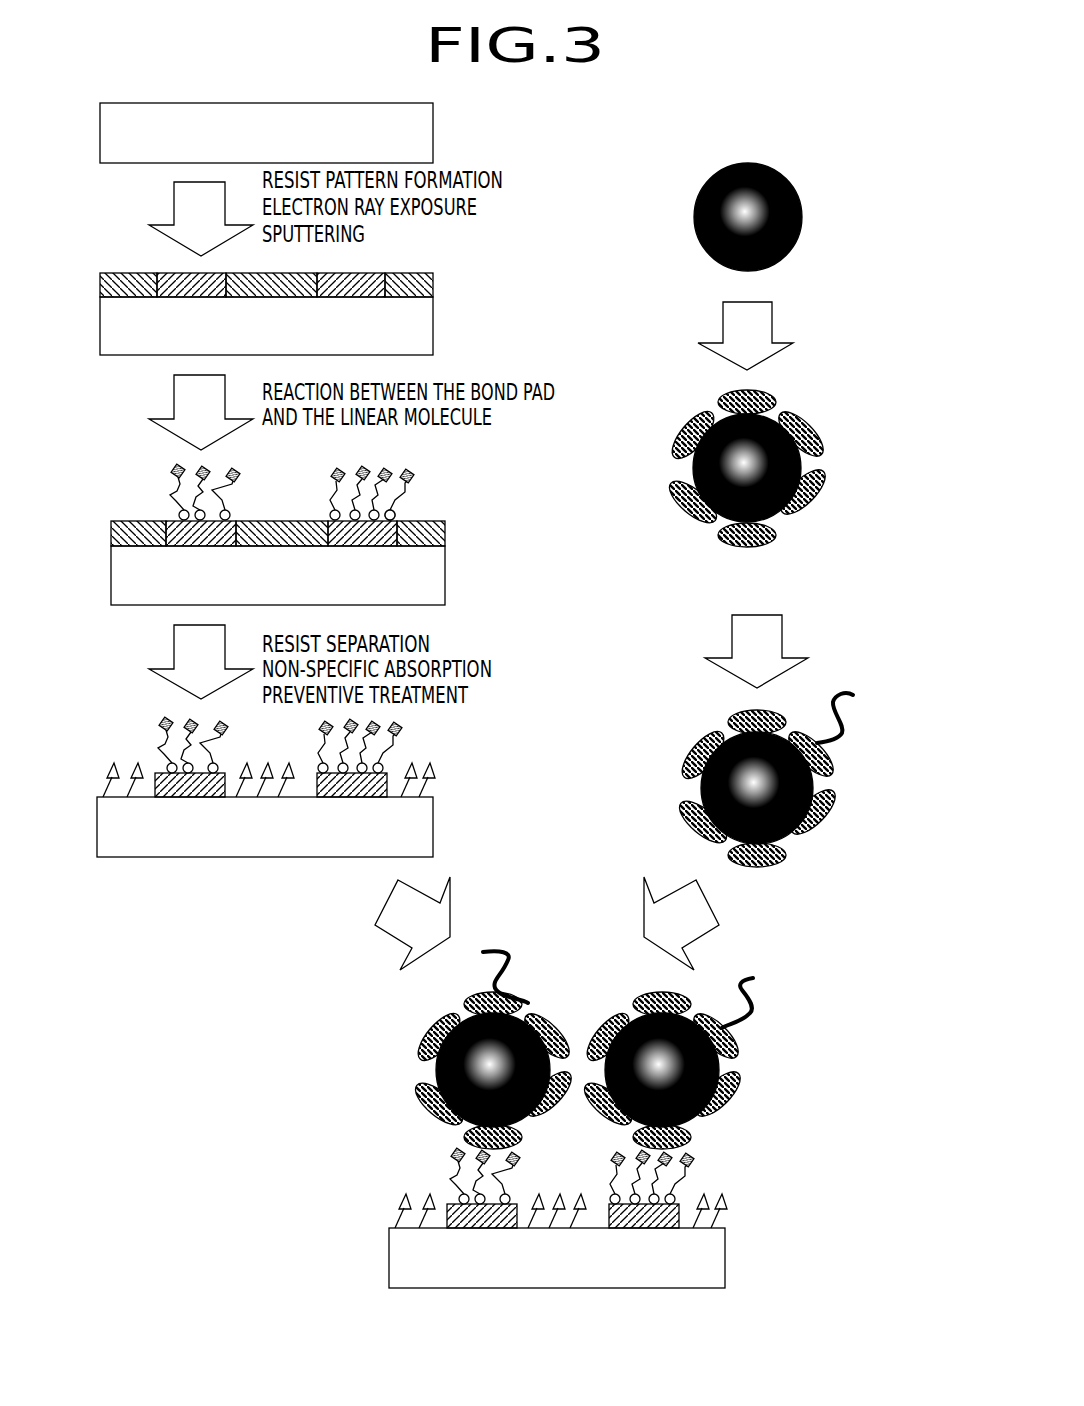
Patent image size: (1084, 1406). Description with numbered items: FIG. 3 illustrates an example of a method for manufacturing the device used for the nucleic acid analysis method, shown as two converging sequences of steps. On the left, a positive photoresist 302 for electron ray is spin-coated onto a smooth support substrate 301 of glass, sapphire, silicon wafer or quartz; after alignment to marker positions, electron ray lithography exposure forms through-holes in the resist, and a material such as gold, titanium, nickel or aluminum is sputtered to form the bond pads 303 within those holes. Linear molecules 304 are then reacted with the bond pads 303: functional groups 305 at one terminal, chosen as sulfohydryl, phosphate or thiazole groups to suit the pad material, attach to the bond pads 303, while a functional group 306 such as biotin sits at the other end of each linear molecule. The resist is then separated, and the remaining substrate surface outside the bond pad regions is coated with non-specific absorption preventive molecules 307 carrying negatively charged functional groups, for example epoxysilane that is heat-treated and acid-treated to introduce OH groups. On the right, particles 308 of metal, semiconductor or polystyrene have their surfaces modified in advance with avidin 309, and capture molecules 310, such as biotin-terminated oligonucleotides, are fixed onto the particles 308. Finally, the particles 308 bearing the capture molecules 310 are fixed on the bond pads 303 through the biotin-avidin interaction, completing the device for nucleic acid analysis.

The smooth support substrate 301 is at (433, 135).
The positive photoresist 302 is at (308, 286).
The bond pads 303 is at (372, 272).
The linear molecules 304 is at (166, 462).
The functional groups 305 is at (392, 513).
The functional group 306 is at (410, 470).
The non-specific absorption preventive molecules 307 is at (433, 775).
The particles 308 is at (785, 177).
The avidin 309 is at (805, 427).
The capture molecules 310 is at (850, 727).